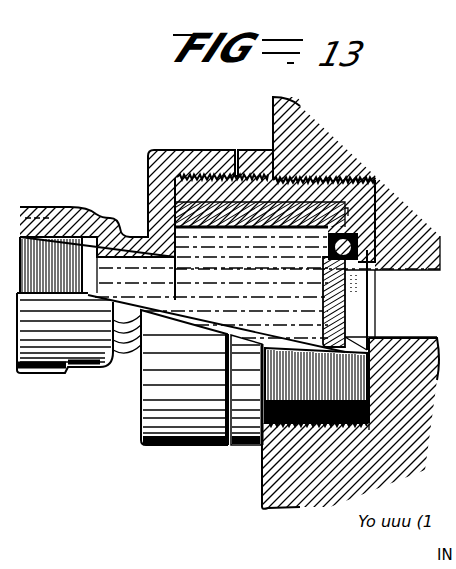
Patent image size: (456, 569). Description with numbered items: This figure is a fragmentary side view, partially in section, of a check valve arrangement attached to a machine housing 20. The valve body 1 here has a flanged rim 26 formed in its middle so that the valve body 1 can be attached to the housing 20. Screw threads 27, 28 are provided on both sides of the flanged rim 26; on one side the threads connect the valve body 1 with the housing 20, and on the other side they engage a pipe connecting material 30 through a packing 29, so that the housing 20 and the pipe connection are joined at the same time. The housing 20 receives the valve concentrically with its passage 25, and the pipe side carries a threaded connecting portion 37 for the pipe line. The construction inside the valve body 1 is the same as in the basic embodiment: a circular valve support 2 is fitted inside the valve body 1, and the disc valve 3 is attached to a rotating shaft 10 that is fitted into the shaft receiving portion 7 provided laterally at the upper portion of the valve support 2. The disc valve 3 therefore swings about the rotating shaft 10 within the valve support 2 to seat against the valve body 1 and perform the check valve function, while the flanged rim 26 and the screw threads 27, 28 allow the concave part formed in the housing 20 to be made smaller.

The valve body 1 is at (245, 193).
The valve support 2 is at (260, 225).
The disc valve 3 is at (322, 303).
The shaft receiving portion 7 is at (326, 238).
The rotating shaft 10 is at (372, 268).
The housing 20 is at (262, 503).
The passage 25 is at (414, 272).
The flanged rim 26 is at (241, 450).
The screw thread 27 is at (340, 180).
The screw thread 28 is at (177, 177).
The packing 29 is at (170, 195).
The pipe connecting material 30 is at (103, 378).
The threaded connecting portion 37 is at (50, 212).